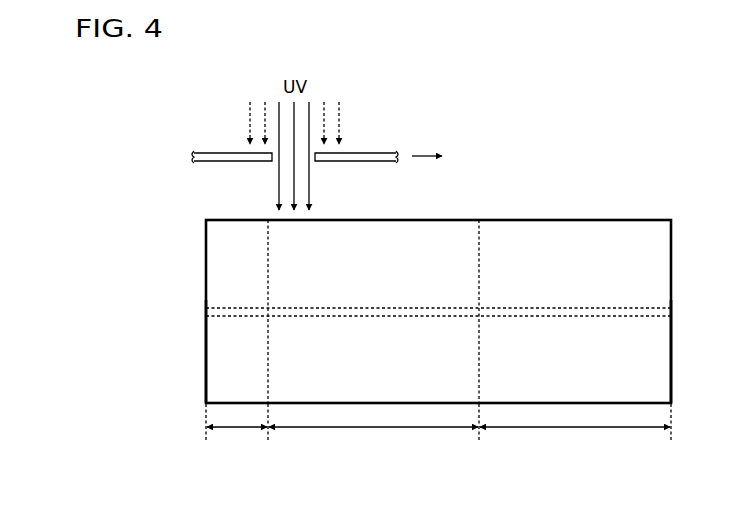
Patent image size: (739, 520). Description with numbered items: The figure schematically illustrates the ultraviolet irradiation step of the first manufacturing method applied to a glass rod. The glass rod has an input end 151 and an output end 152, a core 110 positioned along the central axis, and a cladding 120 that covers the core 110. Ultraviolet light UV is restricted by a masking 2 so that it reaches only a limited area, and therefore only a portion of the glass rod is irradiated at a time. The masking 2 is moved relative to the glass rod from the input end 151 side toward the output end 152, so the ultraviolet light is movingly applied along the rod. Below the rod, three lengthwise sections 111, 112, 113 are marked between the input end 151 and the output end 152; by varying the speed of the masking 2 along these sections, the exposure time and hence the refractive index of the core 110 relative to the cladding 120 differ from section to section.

The masking 2 is at (370, 158).
The core 110 is at (507, 313).
The cladding 120 is at (563, 250).
The first region 111 is at (237, 427).
The second region 112 is at (374, 427).
The third region 113 is at (575, 427).
The input end 151 is at (205, 373).
The output end 152 is at (671, 373).